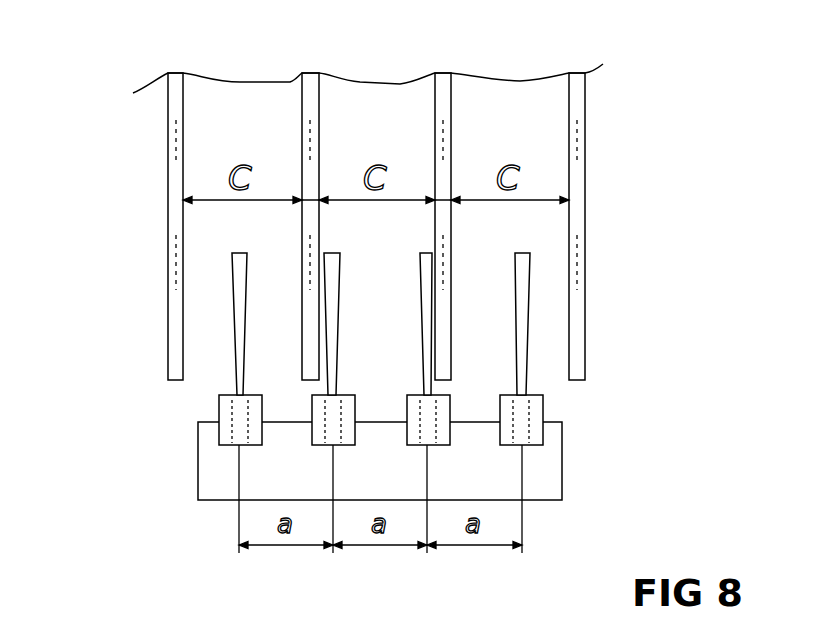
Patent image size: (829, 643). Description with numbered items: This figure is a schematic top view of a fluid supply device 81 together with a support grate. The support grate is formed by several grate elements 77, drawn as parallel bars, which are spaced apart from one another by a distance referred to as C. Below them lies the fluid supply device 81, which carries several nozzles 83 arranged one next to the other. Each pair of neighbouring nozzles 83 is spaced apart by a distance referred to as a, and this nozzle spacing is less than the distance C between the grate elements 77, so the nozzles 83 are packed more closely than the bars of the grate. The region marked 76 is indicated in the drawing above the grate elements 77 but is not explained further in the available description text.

The transfer unit body 76 is at (627, 90).
The grate elements 77 is at (168, 125).
The fluid supply device 81 is at (582, 468).
The nozzles 83 is at (219, 412).